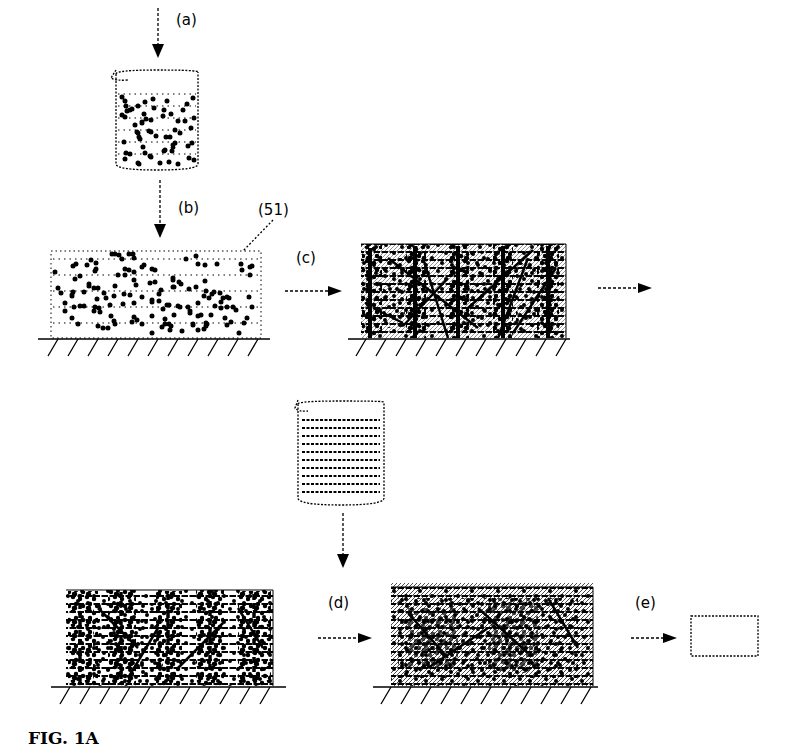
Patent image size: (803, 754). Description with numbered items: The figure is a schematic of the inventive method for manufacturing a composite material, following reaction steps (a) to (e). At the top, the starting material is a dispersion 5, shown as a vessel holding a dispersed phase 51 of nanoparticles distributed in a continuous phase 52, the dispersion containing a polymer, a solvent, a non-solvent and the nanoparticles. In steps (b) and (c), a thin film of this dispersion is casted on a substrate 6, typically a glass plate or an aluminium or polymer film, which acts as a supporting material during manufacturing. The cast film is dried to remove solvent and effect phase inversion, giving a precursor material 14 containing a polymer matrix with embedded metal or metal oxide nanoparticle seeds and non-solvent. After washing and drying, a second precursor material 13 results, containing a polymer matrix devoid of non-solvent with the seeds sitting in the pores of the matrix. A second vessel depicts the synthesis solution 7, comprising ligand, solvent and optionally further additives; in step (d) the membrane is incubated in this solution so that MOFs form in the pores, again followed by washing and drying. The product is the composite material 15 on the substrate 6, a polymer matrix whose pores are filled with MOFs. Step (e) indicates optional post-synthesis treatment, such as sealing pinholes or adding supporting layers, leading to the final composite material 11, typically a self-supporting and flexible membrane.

The dispersion 5 is at (143, 120).
The dispersed phase 51 is at (112, 126).
The continuous phase 52 is at (112, 152).
The substrate 6 is at (567, 350).
The precursor material 14 is at (578, 283).
The synthesis solution 7 is at (391, 398).
The second precursor material 13 is at (270, 587).
The composite material 15 is at (593, 590).
The composite material 11 is at (724, 636).